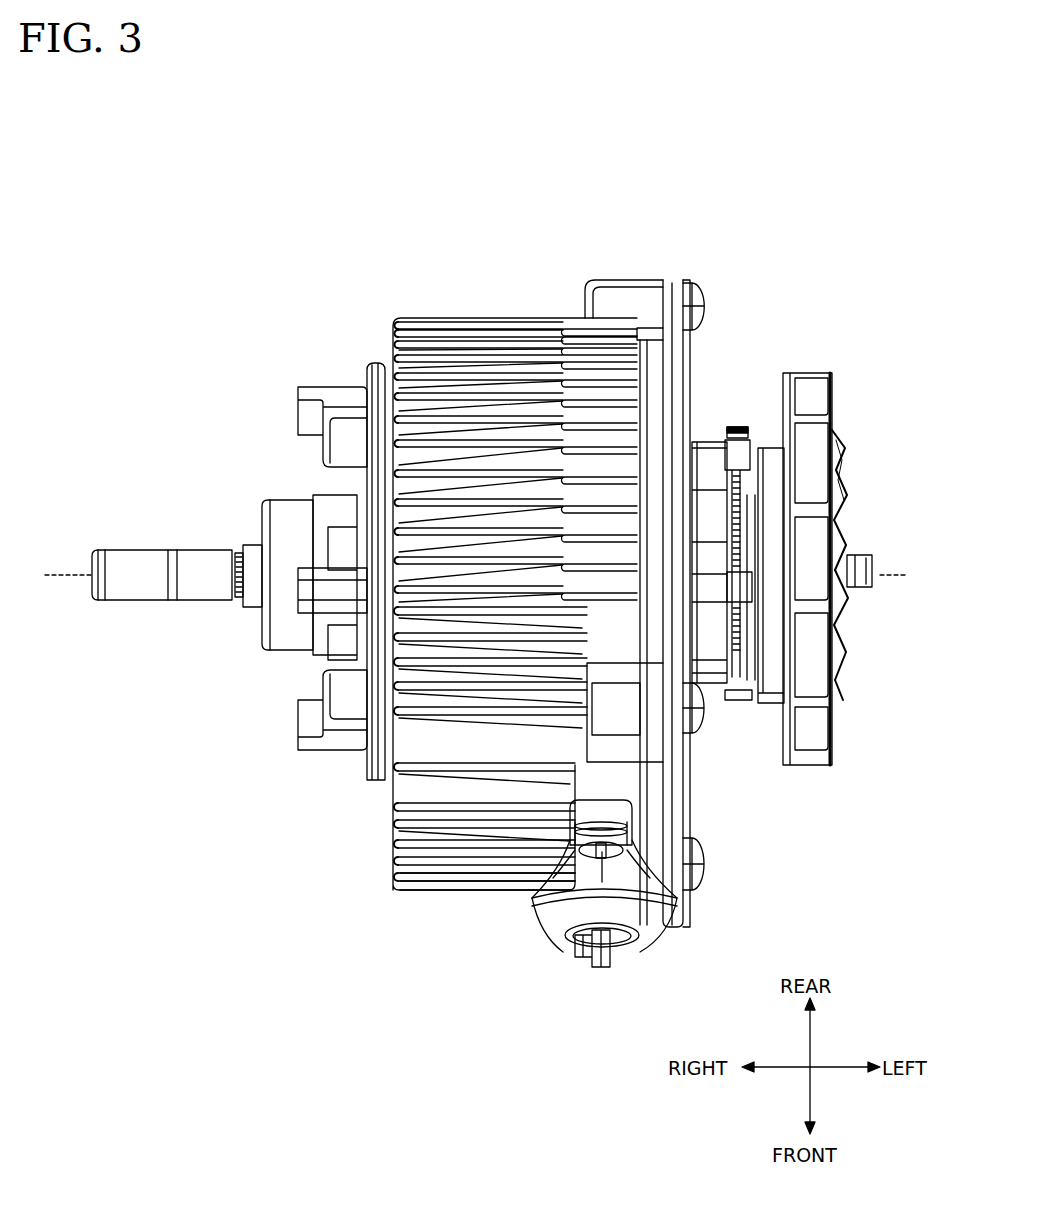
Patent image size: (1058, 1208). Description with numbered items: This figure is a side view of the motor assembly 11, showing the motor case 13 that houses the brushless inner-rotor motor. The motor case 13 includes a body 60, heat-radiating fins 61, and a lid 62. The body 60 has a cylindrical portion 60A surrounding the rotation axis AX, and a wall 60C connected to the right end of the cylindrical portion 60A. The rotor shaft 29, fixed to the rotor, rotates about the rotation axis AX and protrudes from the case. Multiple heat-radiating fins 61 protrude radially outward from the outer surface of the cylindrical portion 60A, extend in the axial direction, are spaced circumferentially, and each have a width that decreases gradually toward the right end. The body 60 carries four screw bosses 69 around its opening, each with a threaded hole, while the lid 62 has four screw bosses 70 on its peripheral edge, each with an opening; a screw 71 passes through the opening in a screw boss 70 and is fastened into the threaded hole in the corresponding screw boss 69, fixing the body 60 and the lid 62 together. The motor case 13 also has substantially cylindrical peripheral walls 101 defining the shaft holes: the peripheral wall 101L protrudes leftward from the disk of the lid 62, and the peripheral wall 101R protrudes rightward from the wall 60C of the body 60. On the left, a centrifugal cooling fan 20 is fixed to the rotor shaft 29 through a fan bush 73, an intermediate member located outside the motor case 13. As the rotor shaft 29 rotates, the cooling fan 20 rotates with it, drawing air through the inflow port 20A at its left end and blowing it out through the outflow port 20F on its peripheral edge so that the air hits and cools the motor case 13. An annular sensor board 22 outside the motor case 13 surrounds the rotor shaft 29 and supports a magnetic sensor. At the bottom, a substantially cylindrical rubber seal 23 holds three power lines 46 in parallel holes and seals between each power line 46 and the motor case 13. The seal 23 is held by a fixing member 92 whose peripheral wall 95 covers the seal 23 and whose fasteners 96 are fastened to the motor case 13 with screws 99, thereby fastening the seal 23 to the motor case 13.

The motor assembly 11 is at (272, 322).
The motor case 13 is at (647, 153).
The body 60 is at (537, 314).
The lid 62 is at (680, 280).
The screw bosses 70 is at (685, 282).
The screw 71 is at (704, 292).
The screw bosses 69 is at (615, 280).
The screws 99 is at (672, 900).
The cooling fan 20 is at (835, 374).
The outflow port 20F is at (812, 376).
The inflow port 20A is at (846, 530).
The fan bush 73 is at (770, 447).
The sensor board 22 is at (737, 427).
The cylindrical portion 60A is at (388, 363).
The wall 60C is at (362, 485).
The heat-radiating fins 61 is at (463, 318).
The rotor shaft 29 is at (196, 550).
The rotation axis AX is at (45, 574).
The peripheral walls 101 is at (485, 646).
The peripheral wall 101R is at (277, 650).
The peripheral wall 101L is at (714, 652).
The seal 23 is at (630, 942).
The power lines 46 is at (581, 962).
The fixing member 92 is at (467, 1050).
The fasteners 96 is at (480, 893).
The peripheral wall 95 is at (547, 914).